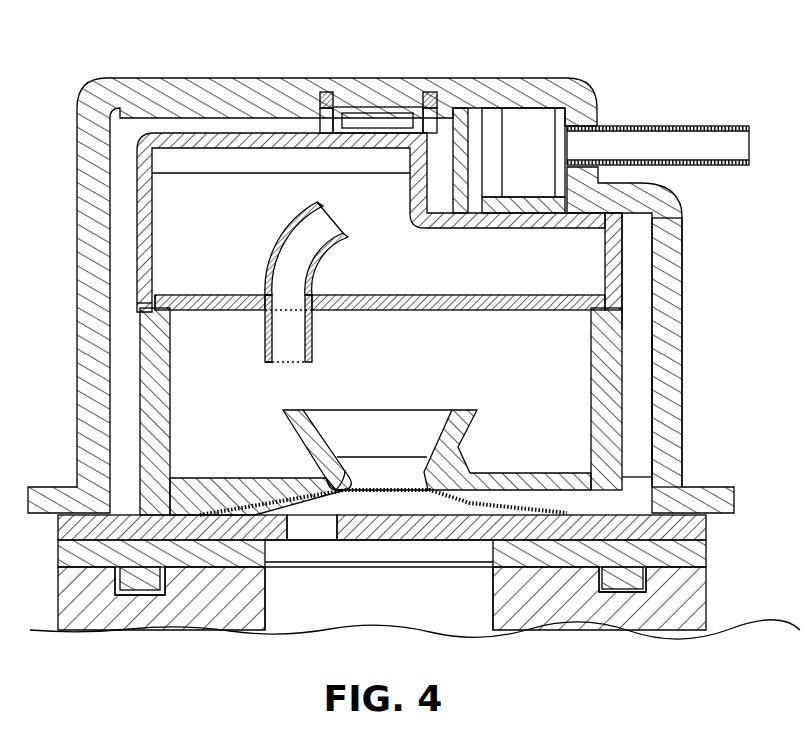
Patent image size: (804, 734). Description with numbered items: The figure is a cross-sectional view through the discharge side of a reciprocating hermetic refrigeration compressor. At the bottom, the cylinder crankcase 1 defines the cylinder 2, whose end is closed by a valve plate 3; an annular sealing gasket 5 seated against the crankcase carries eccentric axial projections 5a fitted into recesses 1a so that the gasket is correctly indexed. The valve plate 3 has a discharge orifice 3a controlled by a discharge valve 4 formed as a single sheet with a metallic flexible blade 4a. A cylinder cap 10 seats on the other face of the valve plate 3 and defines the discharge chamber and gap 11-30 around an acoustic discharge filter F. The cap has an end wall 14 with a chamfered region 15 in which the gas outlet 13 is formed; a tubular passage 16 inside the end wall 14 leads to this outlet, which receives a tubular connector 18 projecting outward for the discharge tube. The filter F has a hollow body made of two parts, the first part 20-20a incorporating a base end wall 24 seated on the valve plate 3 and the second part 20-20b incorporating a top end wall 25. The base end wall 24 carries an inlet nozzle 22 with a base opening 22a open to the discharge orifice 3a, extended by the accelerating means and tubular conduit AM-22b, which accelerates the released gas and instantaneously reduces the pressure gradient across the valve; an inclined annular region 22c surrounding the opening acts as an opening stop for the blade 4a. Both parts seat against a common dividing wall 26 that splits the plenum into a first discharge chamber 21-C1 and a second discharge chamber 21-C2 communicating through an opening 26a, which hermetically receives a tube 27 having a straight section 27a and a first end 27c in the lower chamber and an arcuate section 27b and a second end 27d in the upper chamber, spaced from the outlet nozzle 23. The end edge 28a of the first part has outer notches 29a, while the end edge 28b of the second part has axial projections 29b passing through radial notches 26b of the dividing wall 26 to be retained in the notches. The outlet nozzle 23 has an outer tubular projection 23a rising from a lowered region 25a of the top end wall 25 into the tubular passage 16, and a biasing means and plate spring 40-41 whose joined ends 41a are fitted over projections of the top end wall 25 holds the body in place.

The cylinder crankcase 1 is at (674, 613).
The recess 1a is at (133, 595).
The cylinder 2 is at (488, 595).
The valve plate 3 is at (711, 528).
The discharge orifice 3a is at (328, 527).
The discharge valve 4 is at (217, 507).
The flexible blade 4a is at (348, 488).
The annular sealing gasket 5 is at (711, 550).
The eccentric axial projection 5a is at (143, 597).
The cylinder cap 10 is at (693, 243).
The discharge chamber and gap 11-30 is at (637, 401).
The gas outlet 13 is at (592, 142).
The end wall 14 is at (232, 76).
The chamfered region 15 is at (703, 166).
The tubular passage 16 is at (473, 148).
The tubular connector 18 is at (714, 125).
The hollow body first part 20-20a is at (617, 433).
The hollow body second part 20-20b is at (616, 272).
The first discharge chamber 21-C1 is at (565, 346).
The second discharge chamber 21-C2 is at (585, 270).
The inlet nozzle 22 is at (429, 420).
The base opening 22a is at (420, 480).
The accelerating means / tubular conduit AM-22b is at (455, 434).
The annular region 22c is at (467, 503).
The outlet nozzle 23 is at (512, 226).
The outer tubular projection 23a is at (530, 197).
The base end wall 24 is at (564, 488).
The top end wall 25 is at (247, 138).
The lowered region 25a is at (426, 198).
The common dividing wall 26 is at (230, 292).
The opening 26a is at (272, 296).
The radial notch 26b is at (150, 303).
The tube 27 is at (258, 323).
The straight section 27a is at (313, 337).
The arcuate section 27b is at (286, 236).
The first end 27c is at (283, 372).
The second end 27d is at (347, 217).
The end edge 28a is at (163, 300).
The end edge 28b is at (192, 302).
The outer notch 29a is at (617, 312).
The axial projection 29b is at (636, 310).
The biasing means / plate spring 40-41 is at (313, 117).
The spring ends 41a is at (378, 120).
The acoustic discharge filter F is at (624, 422).